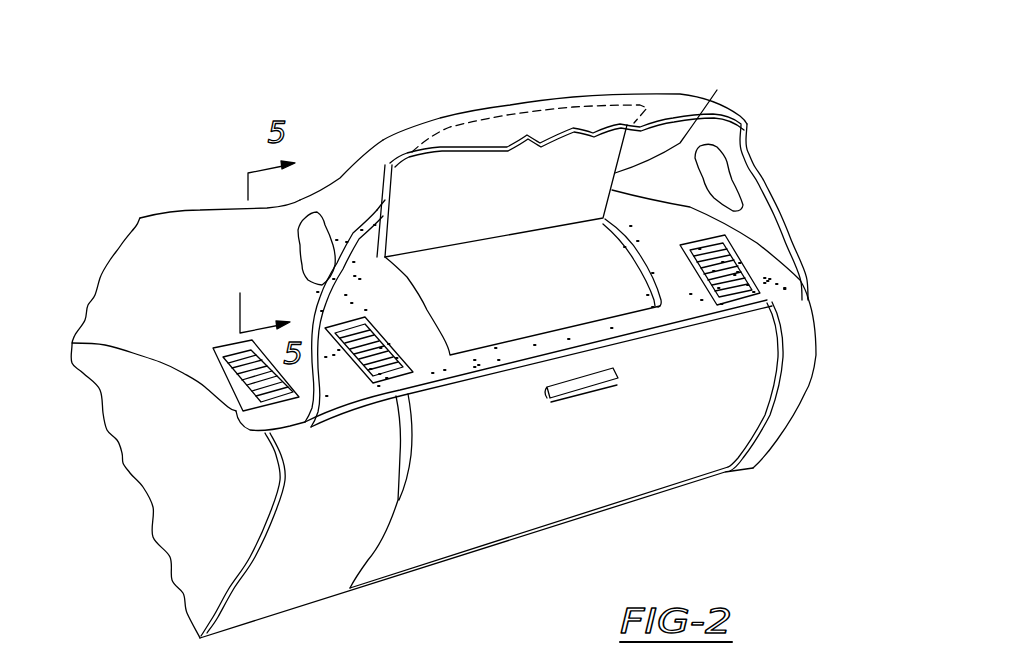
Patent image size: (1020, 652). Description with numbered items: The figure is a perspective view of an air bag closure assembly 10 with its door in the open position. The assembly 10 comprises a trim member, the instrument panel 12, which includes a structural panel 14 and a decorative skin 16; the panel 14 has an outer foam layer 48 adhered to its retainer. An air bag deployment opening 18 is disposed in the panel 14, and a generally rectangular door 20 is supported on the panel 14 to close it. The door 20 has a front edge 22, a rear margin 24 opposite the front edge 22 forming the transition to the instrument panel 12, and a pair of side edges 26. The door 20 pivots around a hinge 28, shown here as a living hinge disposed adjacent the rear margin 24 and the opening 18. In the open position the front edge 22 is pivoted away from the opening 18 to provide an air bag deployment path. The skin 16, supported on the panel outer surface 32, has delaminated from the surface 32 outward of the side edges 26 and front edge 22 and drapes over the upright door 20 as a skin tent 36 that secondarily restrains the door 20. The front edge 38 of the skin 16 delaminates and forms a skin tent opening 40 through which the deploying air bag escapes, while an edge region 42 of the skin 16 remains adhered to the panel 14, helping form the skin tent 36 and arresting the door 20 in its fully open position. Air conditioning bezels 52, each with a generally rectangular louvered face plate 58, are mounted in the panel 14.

The air bag closure assembly 10 is at (208, 106).
The instrument panel 12 is at (190, 199).
The structural panel 14 is at (799, 278).
The decorative skin 16 is at (660, 102).
The panel opening 18 is at (655, 280).
The door 20 is at (460, 177).
The front edge 22 is at (550, 107).
The rear margin 24 is at (463, 245).
The side edges 26 is at (376, 212).
The hinge 28 is at (550, 227).
The panel outer surface 32 is at (757, 253).
The skin tent 36 is at (353, 173).
The front edge of the skin 38 is at (747, 124).
The skin tent opening 40 is at (780, 247).
The edge region 42 is at (167, 277).
The outer foam layer 48 is at (433, 370).
The air conditioning bezels 52 is at (750, 322).
The face plate 58 is at (806, 296).